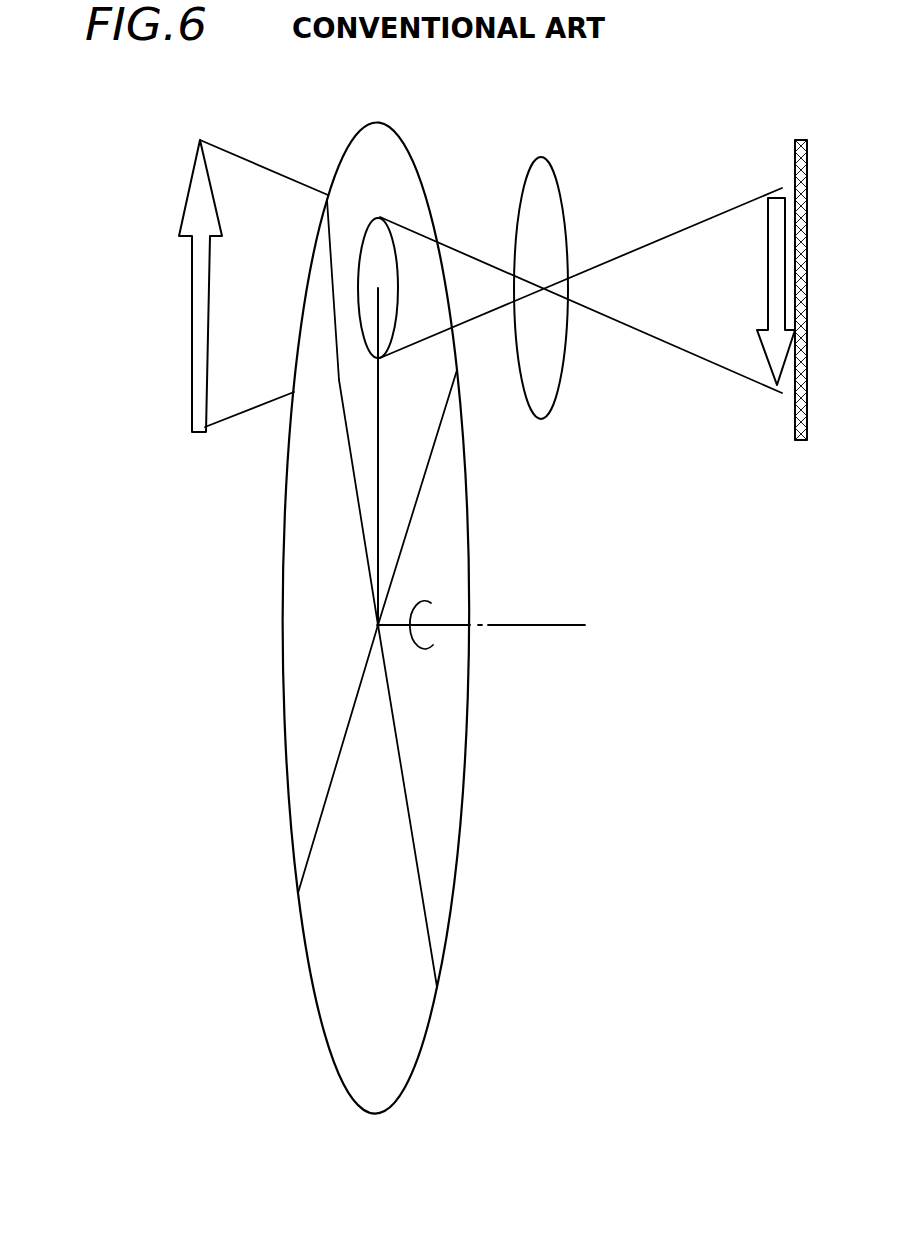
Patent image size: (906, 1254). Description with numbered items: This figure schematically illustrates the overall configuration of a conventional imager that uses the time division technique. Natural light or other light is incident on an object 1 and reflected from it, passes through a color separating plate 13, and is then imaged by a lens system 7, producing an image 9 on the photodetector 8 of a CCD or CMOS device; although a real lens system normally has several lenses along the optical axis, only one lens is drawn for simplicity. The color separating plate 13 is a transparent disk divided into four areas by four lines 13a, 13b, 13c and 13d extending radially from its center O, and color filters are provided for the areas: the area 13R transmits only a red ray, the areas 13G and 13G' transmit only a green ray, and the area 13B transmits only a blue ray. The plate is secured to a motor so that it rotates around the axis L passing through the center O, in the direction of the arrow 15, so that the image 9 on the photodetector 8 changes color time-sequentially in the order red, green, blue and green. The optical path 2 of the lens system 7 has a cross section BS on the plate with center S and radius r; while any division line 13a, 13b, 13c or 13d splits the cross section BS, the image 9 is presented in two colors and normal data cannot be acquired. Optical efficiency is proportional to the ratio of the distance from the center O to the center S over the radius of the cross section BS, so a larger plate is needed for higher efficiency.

The object 1 is at (194, 191).
The optical path 2 is at (258, 164).
The lens system 7 is at (538, 180).
The photodetector 8 is at (800, 133).
The image 9 is at (777, 272).
The color separating plate 13 is at (353, 594).
The red filter area 13R is at (397, 165).
The green filter area 13G is at (193, 546).
The blue filter area 13B is at (308, 975).
The second green filter area 13G' is at (542, 678).
The division line 13a is at (319, 820).
The division line 13b is at (395, 732).
The division line 13c is at (432, 450).
The division line 13d is at (367, 553).
The cross section of the optical path BS is at (378, 242).
The center of the cross section S is at (378, 288).
The center O is at (378, 625).
The axis L is at (530, 625).
The arrow 15 is at (436, 608).